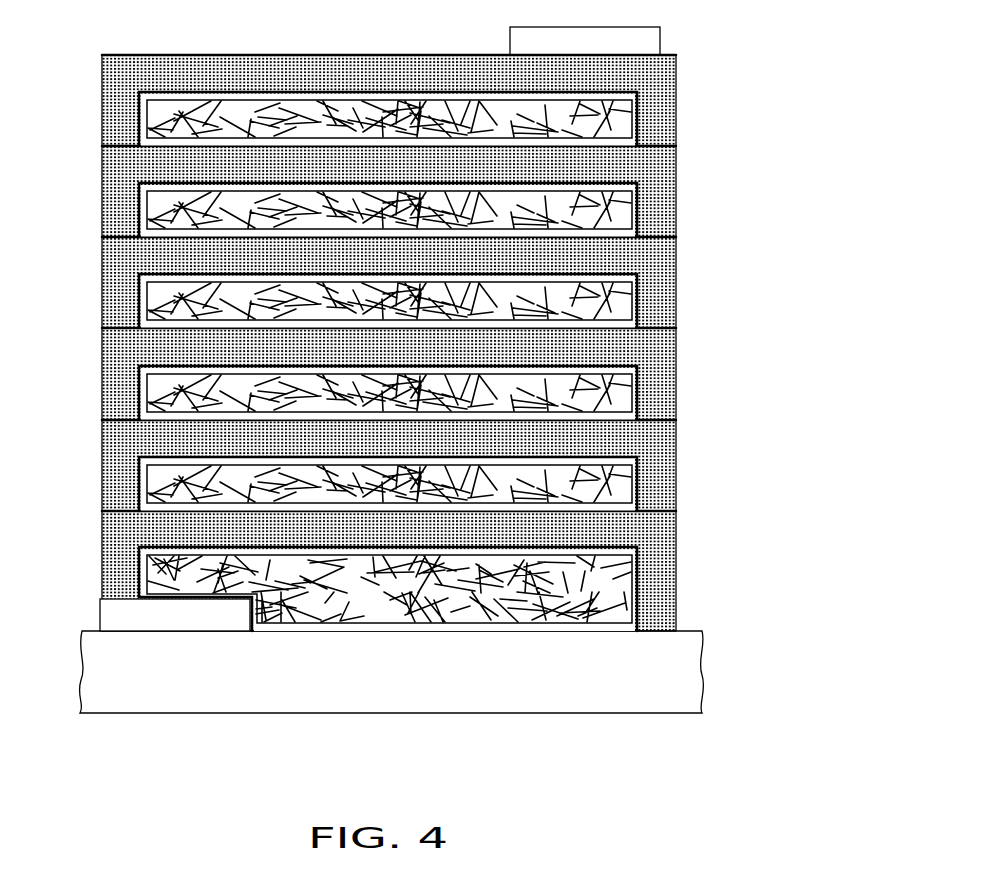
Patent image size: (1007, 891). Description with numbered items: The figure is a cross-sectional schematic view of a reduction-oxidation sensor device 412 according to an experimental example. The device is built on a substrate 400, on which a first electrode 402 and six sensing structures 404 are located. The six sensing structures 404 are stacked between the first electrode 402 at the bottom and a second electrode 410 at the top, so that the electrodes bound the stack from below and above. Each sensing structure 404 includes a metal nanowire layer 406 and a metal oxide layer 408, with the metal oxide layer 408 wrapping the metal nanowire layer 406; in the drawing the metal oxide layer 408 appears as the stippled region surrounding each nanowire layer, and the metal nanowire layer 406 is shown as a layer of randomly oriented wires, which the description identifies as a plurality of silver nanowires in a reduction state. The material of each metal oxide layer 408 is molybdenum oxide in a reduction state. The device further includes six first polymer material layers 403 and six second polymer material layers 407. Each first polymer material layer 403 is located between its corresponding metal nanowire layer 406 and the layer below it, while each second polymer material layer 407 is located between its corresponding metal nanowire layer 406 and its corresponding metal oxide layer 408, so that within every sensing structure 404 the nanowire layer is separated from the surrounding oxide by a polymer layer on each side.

The substrate 400 is at (130, 681).
The first electrode 402 is at (132, 615).
The first polymer material layer 403 is at (134, 143).
The sensing structure 404 is at (423, 343).
The metal nanowire layer 406 is at (653, 127).
The second polymer material layer 407 is at (138, 112).
The metal oxide layer 408 is at (653, 97).
The second electrode 410 is at (650, 44).
The reduction-oxidation sensor device 412 is at (765, 777).